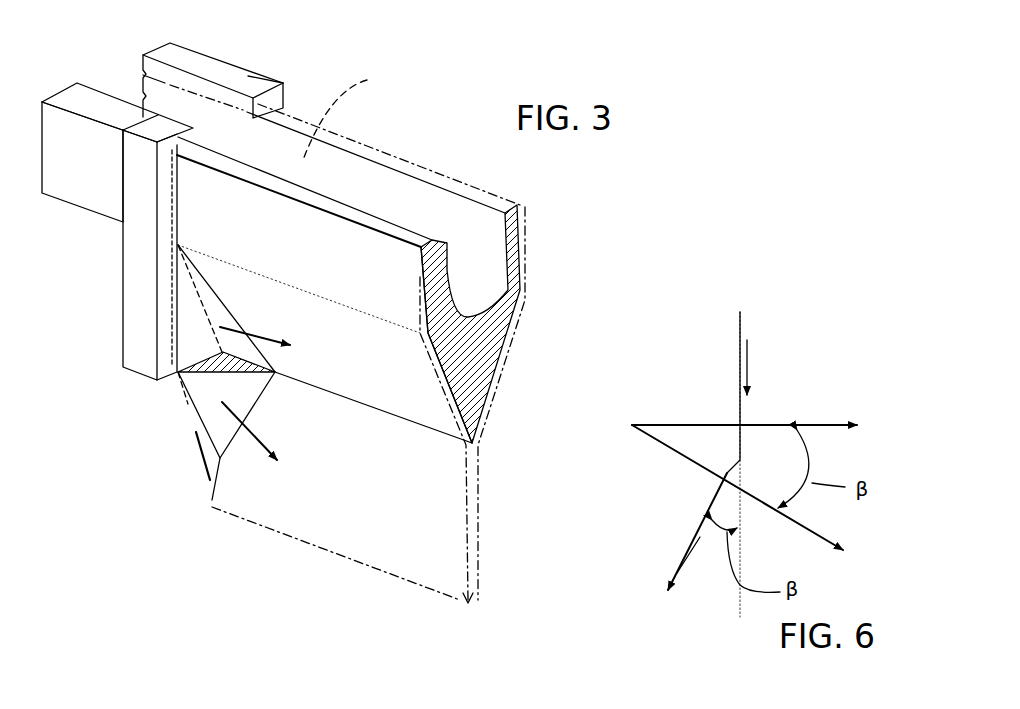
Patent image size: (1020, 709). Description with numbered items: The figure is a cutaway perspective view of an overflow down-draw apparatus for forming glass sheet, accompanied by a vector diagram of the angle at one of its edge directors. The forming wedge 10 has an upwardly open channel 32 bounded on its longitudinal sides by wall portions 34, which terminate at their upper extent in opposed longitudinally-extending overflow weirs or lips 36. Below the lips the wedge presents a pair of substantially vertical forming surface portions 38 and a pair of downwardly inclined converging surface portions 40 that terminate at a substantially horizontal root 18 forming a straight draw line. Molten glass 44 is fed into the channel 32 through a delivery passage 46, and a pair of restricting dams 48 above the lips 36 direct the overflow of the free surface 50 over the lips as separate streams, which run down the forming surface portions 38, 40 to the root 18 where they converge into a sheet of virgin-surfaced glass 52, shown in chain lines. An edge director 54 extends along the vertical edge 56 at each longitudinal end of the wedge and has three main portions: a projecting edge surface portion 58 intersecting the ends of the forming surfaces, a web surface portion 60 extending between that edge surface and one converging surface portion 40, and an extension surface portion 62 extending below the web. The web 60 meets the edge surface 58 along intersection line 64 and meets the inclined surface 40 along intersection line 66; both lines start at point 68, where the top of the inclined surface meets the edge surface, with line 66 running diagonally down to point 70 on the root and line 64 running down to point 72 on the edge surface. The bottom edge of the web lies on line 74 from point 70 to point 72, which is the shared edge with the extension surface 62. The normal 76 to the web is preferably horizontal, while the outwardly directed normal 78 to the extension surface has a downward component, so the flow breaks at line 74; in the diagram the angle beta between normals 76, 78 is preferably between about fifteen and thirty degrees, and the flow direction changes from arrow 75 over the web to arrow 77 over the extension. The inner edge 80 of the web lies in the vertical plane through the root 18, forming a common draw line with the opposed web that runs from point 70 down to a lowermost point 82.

In FIG. 3, the forming wedge 10 is at (503, 323).
In FIG. 3, the root 18 is at (417, 430).
In FIG. 3, the channel 32 is at (482, 290).
In FIG. 3, the wall portions 34 is at (447, 262).
In FIG. 3, the overflow weirs or lips 36 is at (413, 173).
In FIG. 3, the vertical forming surface portions 38 is at (517, 218).
In FIG. 3, the downwardly inclined converging surface portions 40 is at (418, 390).
In FIG. 3, the molten glass 44 is at (122, 87).
In FIG. 3, the delivery passage 46 is at (207, 62).
In FIG. 3, the restricting dams 48 is at (268, 103).
In FIG. 3, the free surface 50 is at (367, 80).
In FIG. 3, the sheet of virgin-surfaced glass 52 is at (367, 570).
In FIG. 3, the edge directors 54 is at (118, 380).
In FIG. 3, the vertical edge 56 is at (88, 102).
In FIG. 3, the projecting edge surface portion 58 is at (178, 243).
In FIG. 3, the web surface portion 60 is at (220, 315).
In FIG. 6, the web surface portion 60 is at (743, 318).
In FIG. 3, the extension surface portion 62 is at (243, 388).
In FIG. 6, the extension surface portion 62 is at (707, 523).
In FIG. 3, the intersection line 64 is at (177, 297).
In FIG. 3, the intersection line 66 is at (215, 292).
In FIG. 3, the point 68 is at (178, 246).
In FIG. 3, the point 70 is at (273, 372).
In FIG. 3, the point 72 is at (175, 373).
In FIG. 3, the line 74 is at (190, 430).
In FIG. 6, the arrow 75 is at (750, 368).
In FIG. 3, the normal 76 is at (277, 330).
In FIG. 6, the normal 76 is at (771, 424).
In FIG. 6, the arrow 77 is at (687, 567).
In FIG. 3, the normal 78 is at (250, 432).
In FIG. 6, the normal 78 is at (747, 497).
In FIG. 3, the inner edge 80 is at (255, 405).
In FIG. 3, the lower most point 82 is at (212, 500).